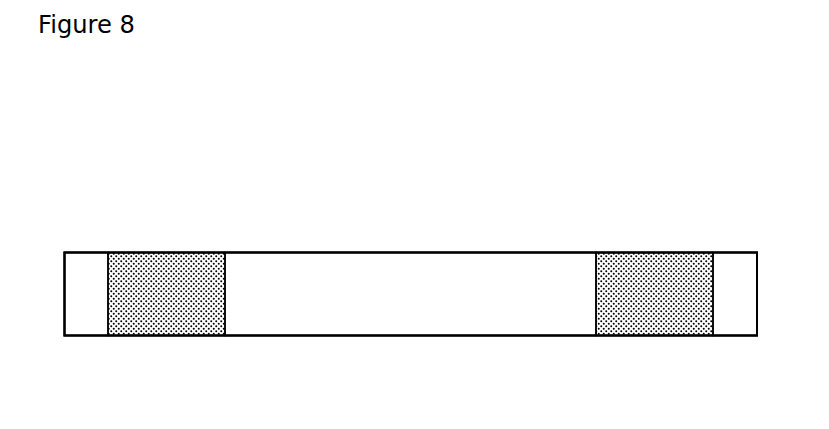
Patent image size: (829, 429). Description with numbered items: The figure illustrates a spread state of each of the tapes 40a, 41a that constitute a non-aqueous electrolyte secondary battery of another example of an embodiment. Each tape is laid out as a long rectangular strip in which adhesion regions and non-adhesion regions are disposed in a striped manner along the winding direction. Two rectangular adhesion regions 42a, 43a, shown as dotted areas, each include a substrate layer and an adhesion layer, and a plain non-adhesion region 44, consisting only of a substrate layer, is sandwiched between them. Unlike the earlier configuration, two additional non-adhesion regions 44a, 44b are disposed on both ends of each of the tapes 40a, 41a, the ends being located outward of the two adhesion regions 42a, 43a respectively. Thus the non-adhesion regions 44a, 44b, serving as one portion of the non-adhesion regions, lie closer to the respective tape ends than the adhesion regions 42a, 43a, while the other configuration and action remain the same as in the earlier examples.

The tape 40a is at (515, 225).
The tape 41a is at (411, 294).
The adhesion region 42a is at (170, 319).
The adhesion region 43a is at (657, 320).
The non-adhesion region 44 is at (408, 320).
The non-adhesion region 44a is at (87, 319).
The non-adhesion region 44b is at (732, 320).